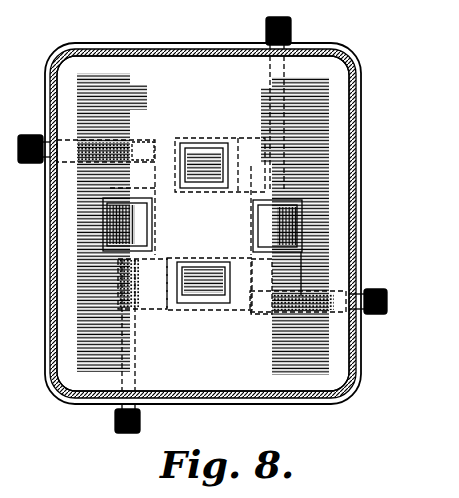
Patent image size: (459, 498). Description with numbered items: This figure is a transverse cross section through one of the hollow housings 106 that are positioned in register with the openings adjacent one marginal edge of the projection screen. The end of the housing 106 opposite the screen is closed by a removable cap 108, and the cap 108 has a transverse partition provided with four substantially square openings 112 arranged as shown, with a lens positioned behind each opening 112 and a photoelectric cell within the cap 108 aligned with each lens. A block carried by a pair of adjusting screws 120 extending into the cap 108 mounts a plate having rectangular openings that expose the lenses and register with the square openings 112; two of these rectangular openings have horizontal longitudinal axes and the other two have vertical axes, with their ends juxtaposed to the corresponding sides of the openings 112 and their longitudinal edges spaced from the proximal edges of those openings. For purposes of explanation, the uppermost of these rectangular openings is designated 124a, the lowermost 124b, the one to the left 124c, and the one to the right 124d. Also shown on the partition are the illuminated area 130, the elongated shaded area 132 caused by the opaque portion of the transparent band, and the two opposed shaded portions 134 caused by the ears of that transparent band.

The hollow housing 106 is at (62, 386).
The removable cap 108 is at (306, 407).
The openings 112 is at (198, 143).
The adjusting screws 120 is at (265, 29).
The uppermost opening 124a is at (226, 166).
The lowermost opening 124b is at (232, 292).
The left opening 124c is at (136, 229).
The right opening 124d is at (264, 238).
The illuminated area 130 is at (203, 223).
The elongated shaded area 132 is at (253, 218).
The opposed shaded portions 134 is at (147, 112).